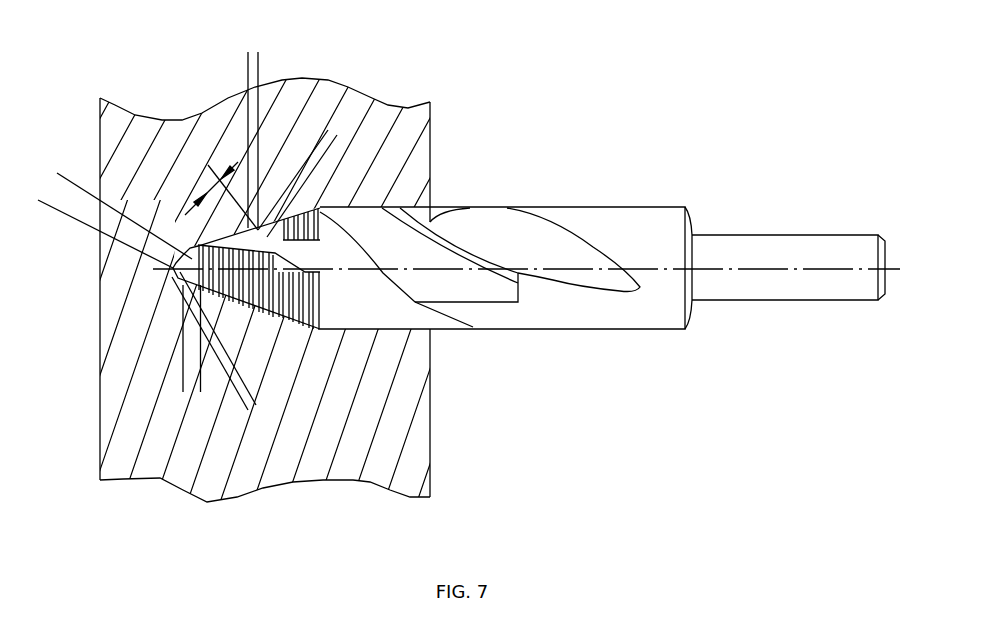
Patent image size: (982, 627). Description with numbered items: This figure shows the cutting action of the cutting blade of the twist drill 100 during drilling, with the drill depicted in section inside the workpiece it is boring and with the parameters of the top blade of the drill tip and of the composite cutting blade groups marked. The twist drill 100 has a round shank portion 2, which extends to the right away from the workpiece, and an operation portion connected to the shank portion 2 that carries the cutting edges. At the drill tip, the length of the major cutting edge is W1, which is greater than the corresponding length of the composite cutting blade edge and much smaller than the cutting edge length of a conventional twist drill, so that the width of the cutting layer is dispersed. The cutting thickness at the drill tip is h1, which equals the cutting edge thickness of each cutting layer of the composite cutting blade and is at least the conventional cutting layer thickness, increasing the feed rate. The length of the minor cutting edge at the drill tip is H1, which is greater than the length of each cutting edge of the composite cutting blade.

The shank portion 2 is at (790, 283).
The twist drill 100 is at (450, 294).
The length of the minor cutting edge at the drill tip H1 is at (293, 57).
The length of the major cutting edge at the drill tip W1 is at (28, 225).
The cutting thickness at the drill tip h1 is at (197, 447).